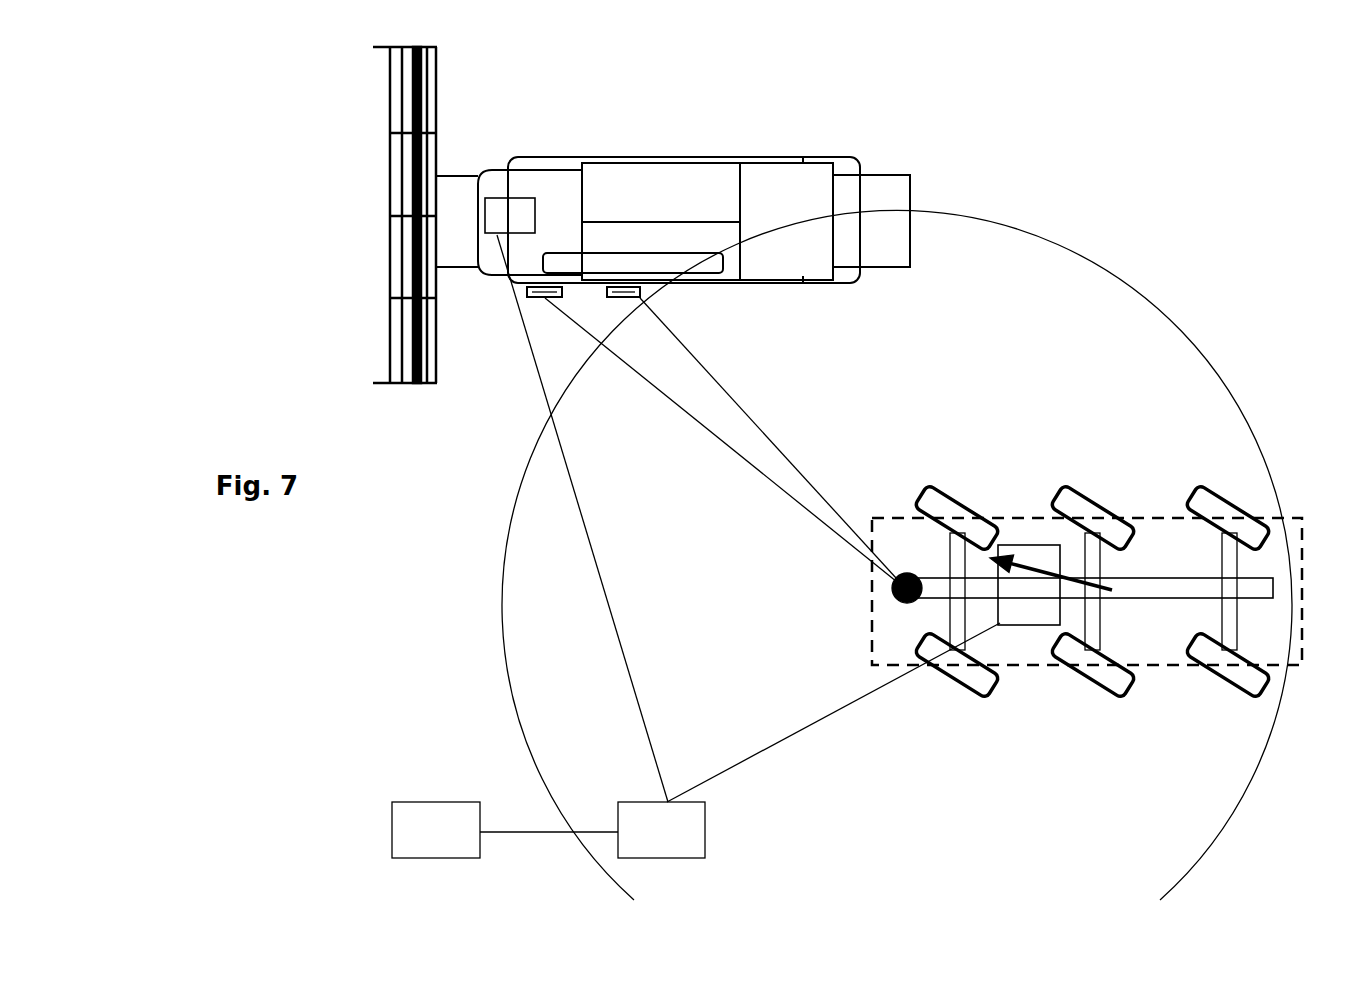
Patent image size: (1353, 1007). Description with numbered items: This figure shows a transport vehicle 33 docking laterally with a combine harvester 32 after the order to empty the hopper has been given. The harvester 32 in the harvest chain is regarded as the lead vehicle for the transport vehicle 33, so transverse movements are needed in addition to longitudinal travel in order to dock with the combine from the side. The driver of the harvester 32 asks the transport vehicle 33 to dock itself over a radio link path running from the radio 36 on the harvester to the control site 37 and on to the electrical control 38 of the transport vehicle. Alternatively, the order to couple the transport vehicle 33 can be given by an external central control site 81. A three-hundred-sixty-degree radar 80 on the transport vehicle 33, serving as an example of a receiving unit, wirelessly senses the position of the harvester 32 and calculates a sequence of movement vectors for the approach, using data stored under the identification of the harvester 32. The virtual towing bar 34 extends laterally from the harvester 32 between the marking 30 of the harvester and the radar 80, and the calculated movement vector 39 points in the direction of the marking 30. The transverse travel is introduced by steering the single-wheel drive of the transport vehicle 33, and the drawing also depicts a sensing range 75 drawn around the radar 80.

The marking 30 is at (640, 298).
The harvester 32 is at (690, 140).
The transport vehicle 33 is at (1137, 487).
The virtual towing bar 34 is at (624, 365).
The radio 36 is at (515, 218).
The control site 37 is at (670, 848).
The electrical control 38 is at (1045, 615).
The movement vector 39 is at (1073, 578).
The range circle 75 is at (505, 585).
The 360° radar 80 is at (907, 603).
The external central control site 81 is at (428, 843).